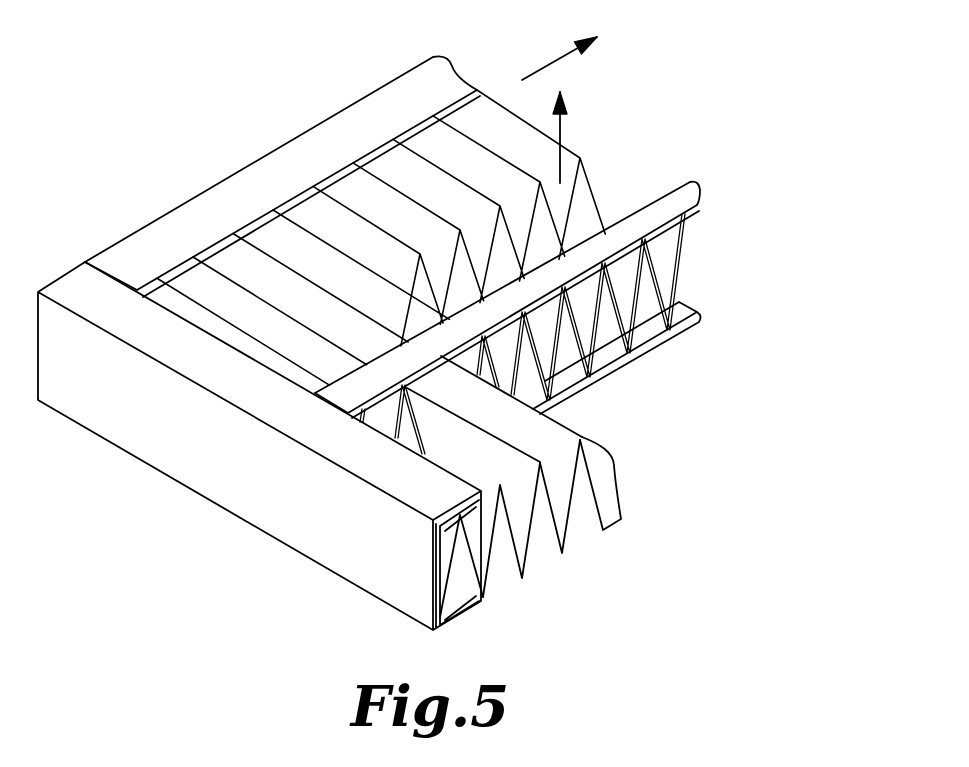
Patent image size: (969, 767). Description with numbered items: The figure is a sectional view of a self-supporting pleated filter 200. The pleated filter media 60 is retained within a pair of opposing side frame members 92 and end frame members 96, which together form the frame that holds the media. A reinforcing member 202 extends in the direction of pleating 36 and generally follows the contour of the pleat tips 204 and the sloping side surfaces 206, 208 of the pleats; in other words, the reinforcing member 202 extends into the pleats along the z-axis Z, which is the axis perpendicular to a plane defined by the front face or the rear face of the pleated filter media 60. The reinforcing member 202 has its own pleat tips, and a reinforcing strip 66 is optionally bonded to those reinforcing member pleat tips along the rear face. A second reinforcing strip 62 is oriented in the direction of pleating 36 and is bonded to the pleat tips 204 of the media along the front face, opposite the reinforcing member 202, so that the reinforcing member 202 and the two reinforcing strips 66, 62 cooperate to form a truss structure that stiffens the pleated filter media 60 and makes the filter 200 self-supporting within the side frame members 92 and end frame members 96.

The direction of pleating 36 is at (550, 62).
The self-supporting pleated filter 200 is at (628, 88).
The side frame members 92 is at (257, 173).
The end frame members 96 is at (76, 285).
The reinforcing strip 66 is at (648, 198).
The reinforcing strip 62 is at (677, 330).
The reinforcing member 202 is at (627, 282).
The pleated filter media 60 is at (600, 445).
The pleat tips 204 is at (603, 530).
The sloping side surface 206 is at (557, 507).
The sloping side surface 208 is at (463, 572).
The z-axis Z is at (560, 133).